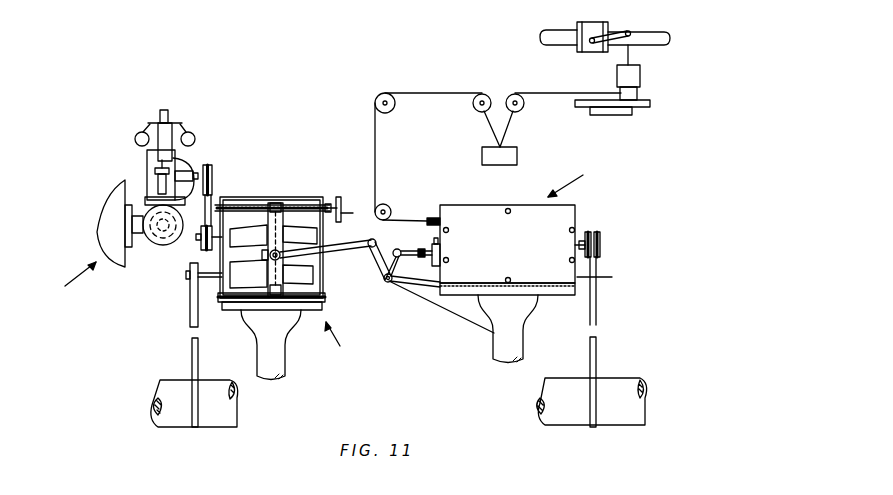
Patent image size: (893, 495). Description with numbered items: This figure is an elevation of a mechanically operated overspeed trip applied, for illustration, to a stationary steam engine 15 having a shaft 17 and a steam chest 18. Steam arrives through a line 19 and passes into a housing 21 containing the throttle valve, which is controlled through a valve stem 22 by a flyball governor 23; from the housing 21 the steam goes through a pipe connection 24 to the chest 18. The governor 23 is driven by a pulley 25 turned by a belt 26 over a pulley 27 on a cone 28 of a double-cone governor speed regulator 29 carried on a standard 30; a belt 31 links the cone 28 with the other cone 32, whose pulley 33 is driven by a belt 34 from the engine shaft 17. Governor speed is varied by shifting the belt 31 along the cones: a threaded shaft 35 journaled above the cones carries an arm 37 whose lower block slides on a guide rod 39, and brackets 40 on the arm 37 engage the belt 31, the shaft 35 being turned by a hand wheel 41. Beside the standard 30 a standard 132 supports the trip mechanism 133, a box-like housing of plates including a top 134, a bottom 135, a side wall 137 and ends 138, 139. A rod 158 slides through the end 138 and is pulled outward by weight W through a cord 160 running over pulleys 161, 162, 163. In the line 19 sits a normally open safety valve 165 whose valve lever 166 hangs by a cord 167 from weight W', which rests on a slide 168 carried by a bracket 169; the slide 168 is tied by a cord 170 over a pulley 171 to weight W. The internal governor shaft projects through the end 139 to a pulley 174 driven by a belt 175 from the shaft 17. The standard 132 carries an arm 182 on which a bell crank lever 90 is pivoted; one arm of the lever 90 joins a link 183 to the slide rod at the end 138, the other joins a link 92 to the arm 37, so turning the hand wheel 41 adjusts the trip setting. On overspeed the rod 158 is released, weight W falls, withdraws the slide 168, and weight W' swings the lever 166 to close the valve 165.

The stationary steam engine 15 is at (70, 281).
The shaft 17 is at (162, 393).
The steam chest 18 is at (107, 226).
The line 19 is at (552, 35).
The housing 21 is at (163, 240).
The valve stem 22 is at (163, 190).
The flyball governor 23 is at (170, 124).
The pipe connection 24 is at (139, 233).
The pulley 25 is at (210, 166).
The belt 26 is at (212, 196).
The pulley 27 is at (202, 238).
The cone 28 is at (297, 233).
The double-cone type governor speed regulator 29 is at (336, 343).
The standard 30 is at (280, 354).
The belt 31 is at (267, 240).
The cone 32 is at (243, 278).
The pulley 33 is at (188, 284).
The belt 34 is at (190, 360).
The threaded shaft 35 is at (298, 203).
The arm 37 is at (277, 203).
The guide rod 39 is at (323, 296).
The brackets 40 is at (268, 255).
The hand wheel 41 is at (338, 202).
The bell crank lever 90 is at (376, 252).
The link 92 is at (352, 255).
The standard 132 is at (505, 337).
The trip mechanism 133 is at (580, 182).
The top 134 is at (473, 205).
The bottom 135 is at (552, 287).
The side wall 137 is at (542, 230).
The end 138 is at (438, 282).
The end 139 is at (610, 280).
The rod 158 is at (432, 217).
The cord 160 is at (423, 92).
The pulley 161 is at (384, 205).
The pulley 162 is at (388, 108).
The pulley 163 is at (478, 97).
The safety valve 165 is at (589, 46).
The valve lever 166 is at (614, 32).
The cord 167 is at (630, 58).
The slide 168 is at (637, 97).
The bracket 169 is at (608, 107).
The cord 170 is at (503, 118).
The pulley 171 is at (515, 93).
The pulley 174 is at (600, 238).
The belt 175 is at (598, 313).
The arm 182 is at (471, 312).
The link 183 is at (409, 249).